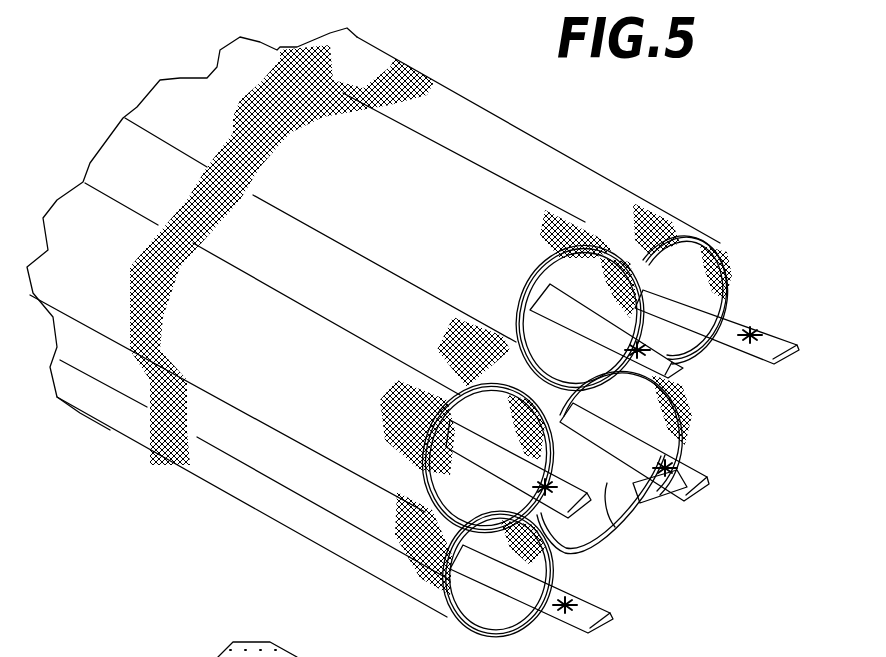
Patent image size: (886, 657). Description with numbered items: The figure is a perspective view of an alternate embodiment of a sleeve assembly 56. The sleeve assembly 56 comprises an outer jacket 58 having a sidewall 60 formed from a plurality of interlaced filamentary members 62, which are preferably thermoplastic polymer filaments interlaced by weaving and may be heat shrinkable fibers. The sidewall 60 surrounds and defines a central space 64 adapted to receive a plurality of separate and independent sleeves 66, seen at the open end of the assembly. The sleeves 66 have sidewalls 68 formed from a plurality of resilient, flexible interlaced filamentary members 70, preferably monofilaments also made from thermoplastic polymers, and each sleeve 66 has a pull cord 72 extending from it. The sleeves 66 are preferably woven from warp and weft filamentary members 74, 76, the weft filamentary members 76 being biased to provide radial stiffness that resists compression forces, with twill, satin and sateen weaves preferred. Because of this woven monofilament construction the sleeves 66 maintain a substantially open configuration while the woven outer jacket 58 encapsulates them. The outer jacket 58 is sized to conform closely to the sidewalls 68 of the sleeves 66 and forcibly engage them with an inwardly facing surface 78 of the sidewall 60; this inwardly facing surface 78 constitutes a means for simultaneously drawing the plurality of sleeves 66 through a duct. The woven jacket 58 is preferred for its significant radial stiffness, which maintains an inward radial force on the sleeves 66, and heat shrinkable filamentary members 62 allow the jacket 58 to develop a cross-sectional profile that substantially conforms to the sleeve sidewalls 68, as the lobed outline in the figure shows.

The sleeve assembly 56 is at (640, 152).
The outer jacket 58 is at (420, 72).
The sidewall 60 is at (205, 93).
The filamentary members 62 is at (197, 210).
The central space 64 is at (545, 565).
The sleeves 66 is at (707, 365).
The sidewalls 68 is at (667, 213).
The filamentary members 70 is at (677, 457).
The pull cord 72 is at (773, 340).
The warp filamentary members 74 is at (617, 537).
The weft filamentary members 76 is at (607, 483).
The inwardly facing surface 78 is at (677, 423).